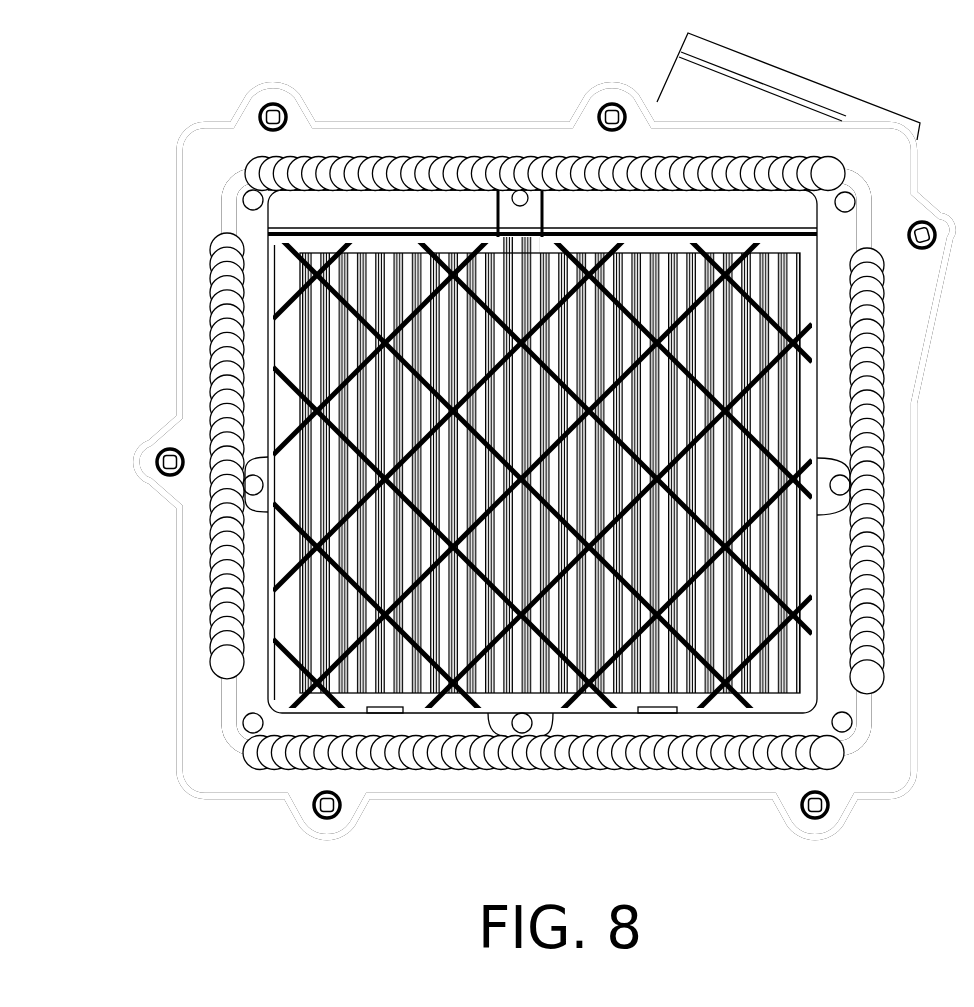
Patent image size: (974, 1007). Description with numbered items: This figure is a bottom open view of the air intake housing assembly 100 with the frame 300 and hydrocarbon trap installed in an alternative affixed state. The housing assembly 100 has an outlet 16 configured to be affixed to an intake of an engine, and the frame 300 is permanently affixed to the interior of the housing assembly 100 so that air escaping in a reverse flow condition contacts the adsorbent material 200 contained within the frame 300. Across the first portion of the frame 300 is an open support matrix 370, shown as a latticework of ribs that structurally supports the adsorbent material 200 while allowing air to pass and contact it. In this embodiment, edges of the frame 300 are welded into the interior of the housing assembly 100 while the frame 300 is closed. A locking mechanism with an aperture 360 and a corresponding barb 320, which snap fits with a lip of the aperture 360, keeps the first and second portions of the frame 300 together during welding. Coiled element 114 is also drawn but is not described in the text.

The housing assembly 100 is at (215, 145).
The outlet 16 is at (821, 95).
The coil spring seal 114 is at (222, 322).
The adsorbent material 200 is at (372, 285).
The frame 300 is at (608, 205).
The barb 320 is at (392, 713).
The aperture 360 is at (368, 713).
The open support matrix 370 is at (719, 685).